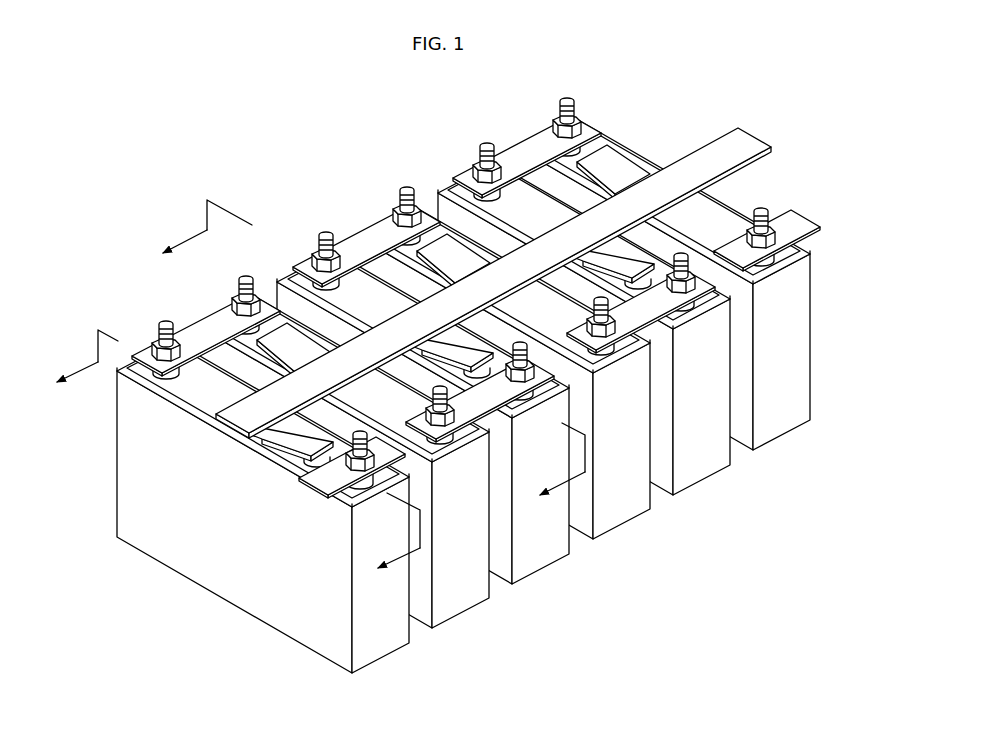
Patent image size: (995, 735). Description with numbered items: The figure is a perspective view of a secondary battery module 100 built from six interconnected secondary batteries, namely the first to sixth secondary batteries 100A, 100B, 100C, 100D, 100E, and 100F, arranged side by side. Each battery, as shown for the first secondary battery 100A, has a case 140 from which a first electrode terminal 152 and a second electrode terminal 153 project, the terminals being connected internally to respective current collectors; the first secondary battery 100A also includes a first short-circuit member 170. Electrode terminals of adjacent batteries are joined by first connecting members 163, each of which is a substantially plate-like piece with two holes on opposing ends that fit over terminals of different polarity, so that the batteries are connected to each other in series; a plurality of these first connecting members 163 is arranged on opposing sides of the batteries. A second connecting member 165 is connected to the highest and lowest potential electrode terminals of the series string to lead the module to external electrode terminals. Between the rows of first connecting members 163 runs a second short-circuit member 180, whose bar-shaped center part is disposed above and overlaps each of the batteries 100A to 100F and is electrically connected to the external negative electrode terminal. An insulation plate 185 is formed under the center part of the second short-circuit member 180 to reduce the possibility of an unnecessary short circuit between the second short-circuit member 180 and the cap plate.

The secondary battery module 100 is at (103, 128).
The first secondary battery 100A is at (272, 533).
The second secondary battery 100B is at (468, 621).
The third secondary battery 100C is at (548, 576).
The fourth secondary battery 100D is at (626, 533).
The fifth secondary battery 100E is at (707, 489).
The sixth secondary battery 100F is at (789, 443).
The case 140 is at (225, 585).
The first electrode terminal 152 is at (245, 286).
The second electrode terminal 153 is at (166, 330).
The first connecting member 163 is at (224, 318).
The second connecting member 165 is at (305, 490).
The first short-circuit member 170 is at (290, 462).
The second short-circuit member 180 is at (210, 403).
The insulation plate 185 is at (292, 461).